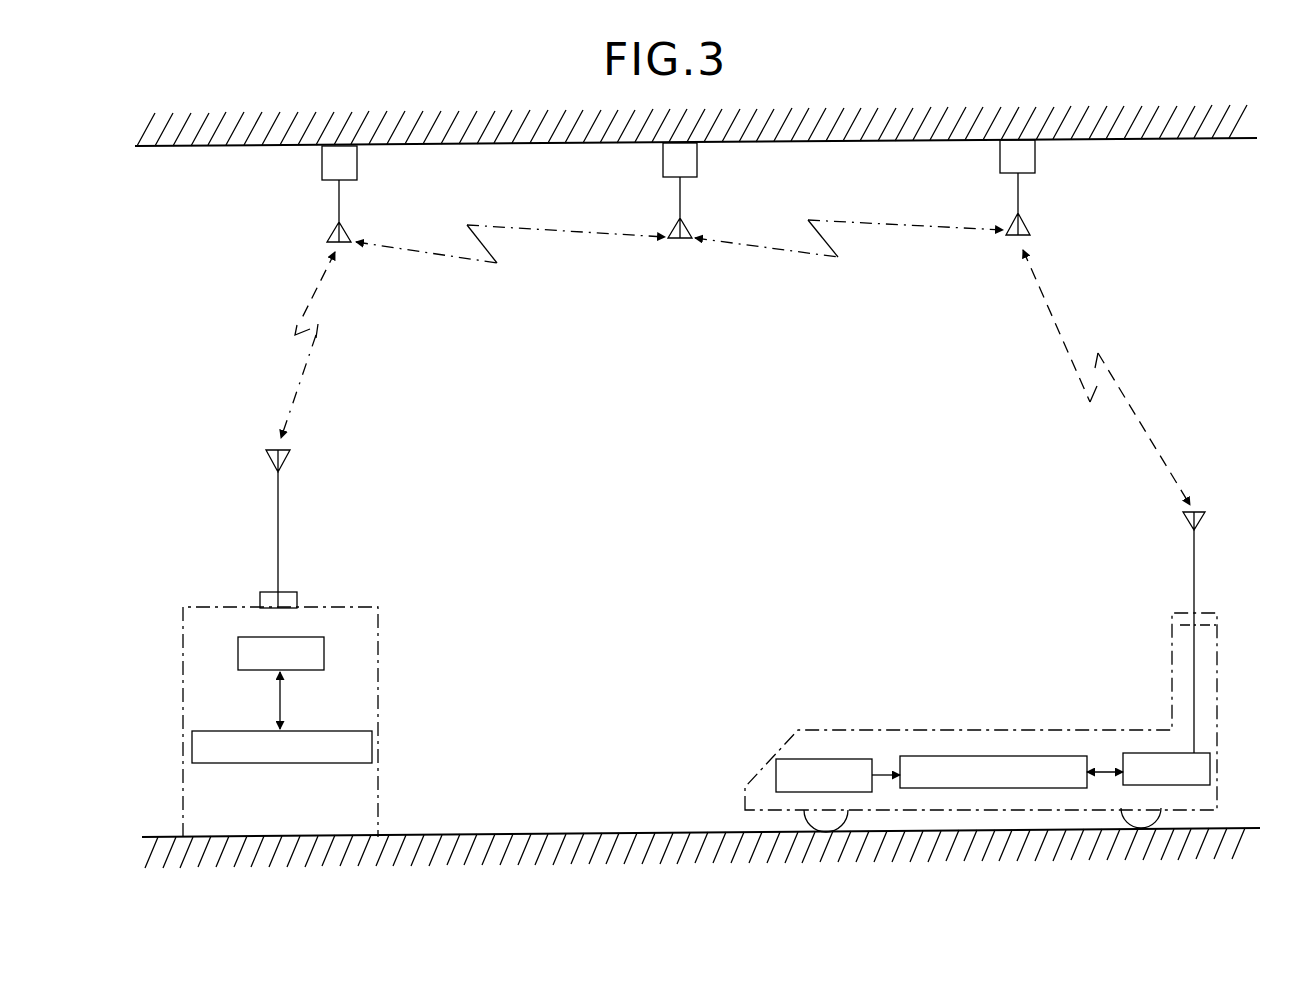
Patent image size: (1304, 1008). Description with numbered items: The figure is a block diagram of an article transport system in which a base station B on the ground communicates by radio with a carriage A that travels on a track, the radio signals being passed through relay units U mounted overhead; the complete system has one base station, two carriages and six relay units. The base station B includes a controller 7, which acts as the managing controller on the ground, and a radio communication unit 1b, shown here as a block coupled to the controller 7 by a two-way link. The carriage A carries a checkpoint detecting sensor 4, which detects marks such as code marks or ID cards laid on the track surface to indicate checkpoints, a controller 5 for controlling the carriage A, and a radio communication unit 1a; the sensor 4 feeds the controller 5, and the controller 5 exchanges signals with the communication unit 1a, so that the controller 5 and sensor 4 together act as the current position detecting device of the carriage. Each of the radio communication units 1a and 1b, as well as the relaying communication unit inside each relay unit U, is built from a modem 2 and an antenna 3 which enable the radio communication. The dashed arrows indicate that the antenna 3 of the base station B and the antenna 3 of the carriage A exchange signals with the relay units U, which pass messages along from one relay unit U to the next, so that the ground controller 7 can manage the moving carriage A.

The relay unit U is at (321, 167).
The antenna 3 is at (290, 457).
The modem 2 is at (323, 637).
The radio communication unit 1a is at (1166, 590).
The radio communication unit 1b is at (209, 496).
The carriage A is at (745, 775).
The base station B is at (182, 640).
The controller 7 is at (372, 731).
The checkpoint detecting sensor 4 is at (835, 759).
The controller 5 is at (990, 756).